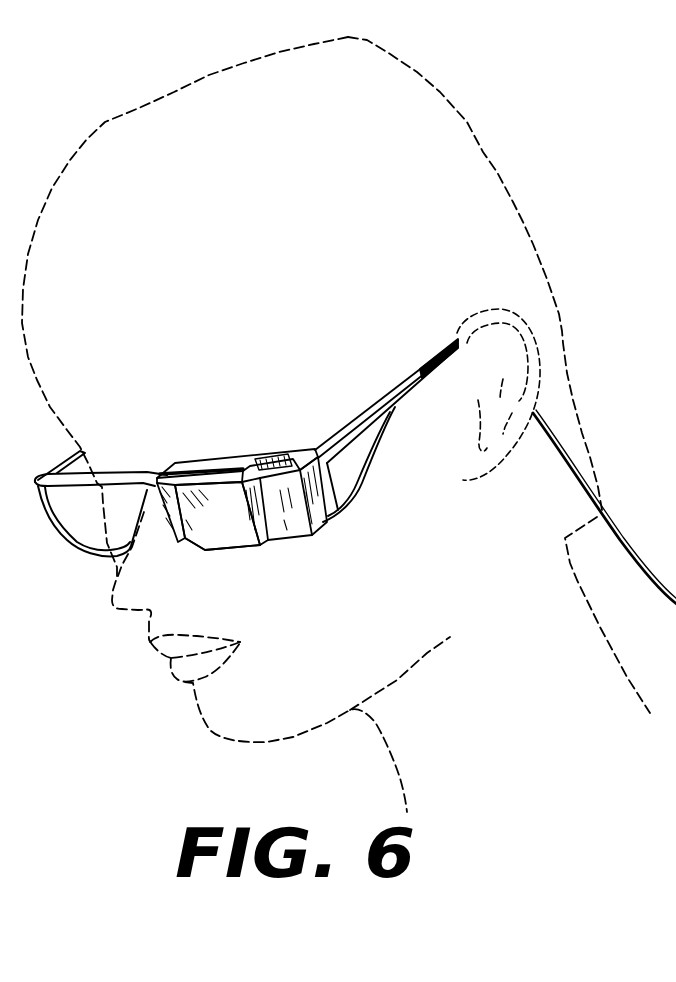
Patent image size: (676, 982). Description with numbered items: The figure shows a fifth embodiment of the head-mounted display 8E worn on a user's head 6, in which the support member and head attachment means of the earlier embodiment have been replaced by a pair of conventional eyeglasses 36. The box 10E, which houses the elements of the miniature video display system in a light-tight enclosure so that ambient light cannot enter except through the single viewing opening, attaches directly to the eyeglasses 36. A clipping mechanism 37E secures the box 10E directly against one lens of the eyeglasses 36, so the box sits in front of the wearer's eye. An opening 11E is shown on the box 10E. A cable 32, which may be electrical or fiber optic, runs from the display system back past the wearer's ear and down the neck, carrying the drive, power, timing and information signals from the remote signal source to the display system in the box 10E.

The user's head 6 is at (530, 211).
The head-mounted display 8E is at (295, 551).
The box 10E is at (227, 530).
The slot 11E is at (268, 461).
The clipping mechanism 37E is at (207, 462).
The eyeglasses 36 is at (432, 357).
The cable 32 is at (596, 513).